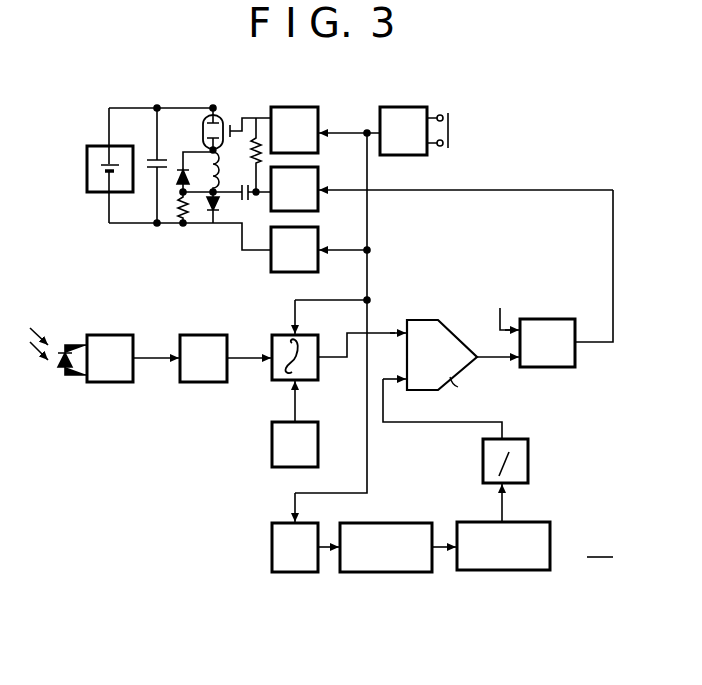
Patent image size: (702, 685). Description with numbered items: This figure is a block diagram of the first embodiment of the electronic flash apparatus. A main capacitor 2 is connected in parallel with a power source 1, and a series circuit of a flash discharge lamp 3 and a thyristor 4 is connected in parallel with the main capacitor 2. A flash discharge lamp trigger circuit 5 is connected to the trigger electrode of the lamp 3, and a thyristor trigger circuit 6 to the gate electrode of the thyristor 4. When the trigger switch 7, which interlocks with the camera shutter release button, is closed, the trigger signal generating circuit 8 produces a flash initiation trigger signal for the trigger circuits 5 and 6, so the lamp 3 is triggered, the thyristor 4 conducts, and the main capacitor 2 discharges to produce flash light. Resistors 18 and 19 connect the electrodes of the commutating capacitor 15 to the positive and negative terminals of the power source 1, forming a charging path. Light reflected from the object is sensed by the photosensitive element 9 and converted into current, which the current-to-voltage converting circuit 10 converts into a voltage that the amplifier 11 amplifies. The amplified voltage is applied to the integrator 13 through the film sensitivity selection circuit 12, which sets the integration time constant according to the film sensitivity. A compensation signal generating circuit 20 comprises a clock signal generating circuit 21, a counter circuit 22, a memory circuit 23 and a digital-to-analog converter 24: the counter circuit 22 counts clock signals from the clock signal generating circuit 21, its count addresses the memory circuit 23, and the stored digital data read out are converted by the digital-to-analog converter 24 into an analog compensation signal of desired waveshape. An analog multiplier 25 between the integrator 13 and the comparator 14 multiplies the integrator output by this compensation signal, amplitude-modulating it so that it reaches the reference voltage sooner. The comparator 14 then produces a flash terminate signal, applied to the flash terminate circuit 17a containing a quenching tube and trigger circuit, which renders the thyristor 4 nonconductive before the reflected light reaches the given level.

The power source 1 is at (87, 167).
The main capacitor 2 is at (169, 163).
The flash discharge lamp 3 is at (207, 115).
The thyristor 4 is at (213, 214).
The flash discharge lamp trigger circuit 5 is at (304, 107).
The thyristor trigger circuit 6 is at (318, 263).
The trigger switch 7 is at (450, 135).
The trigger signal generating circuit 8 is at (405, 107).
The photosensitive element 9 is at (58, 372).
The current-to-voltage converting circuit 10 is at (112, 382).
The amplifier 11 is at (209, 382).
The film sensitivity selection circuit 12 is at (318, 443).
The integrator 13 is at (313, 380).
The comparator 14 is at (566, 319).
The commutating capacitor 15 is at (248, 201).
The flash terminate circuit 17a is at (318, 178).
The resistor 18 is at (255, 137).
The resistor 19 is at (183, 214).
The compensation signal generating circuit 20 is at (442, 520).
The clock signal generating circuit 21 is at (303, 573).
The counter circuit 22 is at (391, 573).
The memory circuit 23 is at (505, 571).
The digital-to-analog converter 24 is at (528, 463).
The analog multiplier 25 is at (435, 320).